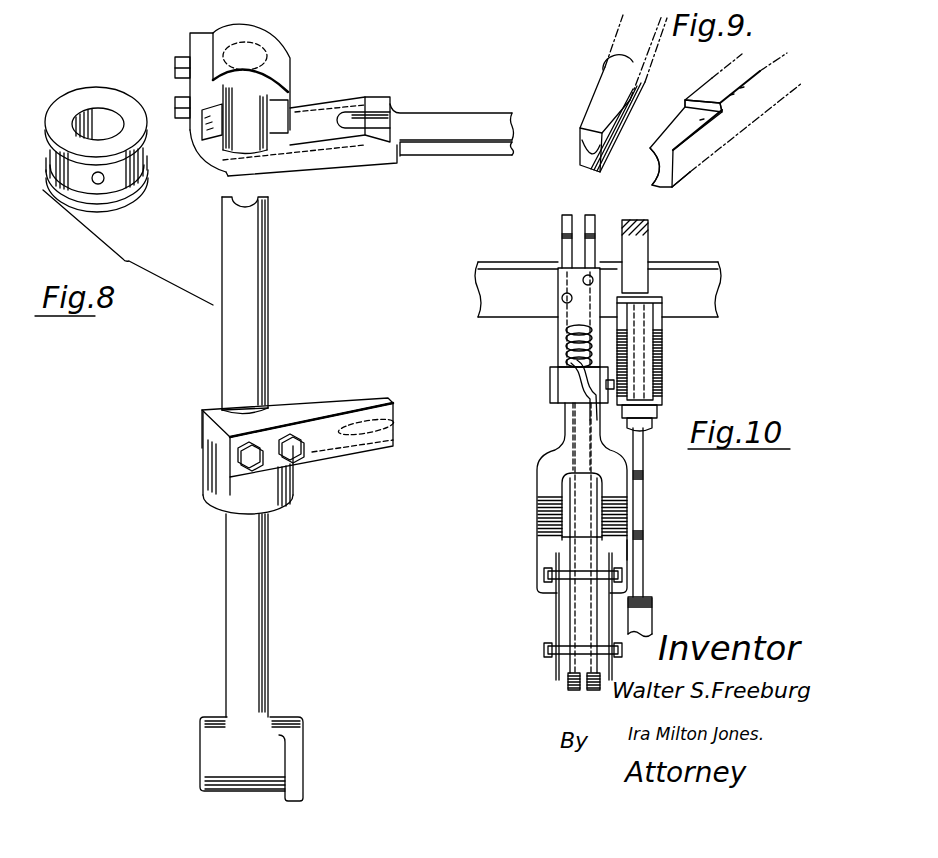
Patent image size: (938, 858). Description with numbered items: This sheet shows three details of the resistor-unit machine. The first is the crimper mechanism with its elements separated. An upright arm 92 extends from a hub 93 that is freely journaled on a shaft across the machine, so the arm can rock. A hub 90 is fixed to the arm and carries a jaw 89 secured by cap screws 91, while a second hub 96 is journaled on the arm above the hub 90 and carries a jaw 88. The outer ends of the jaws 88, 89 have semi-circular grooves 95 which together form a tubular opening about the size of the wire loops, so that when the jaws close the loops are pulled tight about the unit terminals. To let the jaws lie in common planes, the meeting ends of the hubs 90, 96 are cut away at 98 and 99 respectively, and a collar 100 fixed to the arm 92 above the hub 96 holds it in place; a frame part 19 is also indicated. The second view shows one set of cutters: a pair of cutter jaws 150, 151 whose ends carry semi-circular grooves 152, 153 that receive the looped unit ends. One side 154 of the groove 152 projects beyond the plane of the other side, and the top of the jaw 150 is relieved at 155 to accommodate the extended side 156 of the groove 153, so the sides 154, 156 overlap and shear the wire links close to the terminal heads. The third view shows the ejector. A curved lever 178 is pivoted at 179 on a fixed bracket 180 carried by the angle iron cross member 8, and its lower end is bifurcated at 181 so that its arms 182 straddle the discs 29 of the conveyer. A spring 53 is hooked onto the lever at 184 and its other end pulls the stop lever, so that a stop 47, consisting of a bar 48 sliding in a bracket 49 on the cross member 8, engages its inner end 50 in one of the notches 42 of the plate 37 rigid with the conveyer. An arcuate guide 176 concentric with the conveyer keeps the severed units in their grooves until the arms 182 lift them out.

In FIG. 8, the collar 100 is at (110, 92).
In FIG. 8, the upright arm 92 is at (263, 619).
In FIG. 8, the hub 93 is at (242, 744).
In FIG. 8, the hub 90 is at (215, 484).
In FIG. 8, the cap screw 91 is at (250, 462).
In FIG. 8, the jaw 89 is at (320, 410).
In FIG. 8, the cut-away portion 98 is at (285, 400).
In FIG. 8, the semi-circular groove 95 is at (381, 116).
In FIG. 8, the hub 96 is at (288, 72).
In FIG. 8, the cut-away portion 99 is at (221, 131).
In FIG. 8, the jaw 88 is at (319, 154).
In FIG. 8, the frame 19 is at (392, 0).
In FIG. 9, the cutter jaw 150 is at (767, 110).
In FIG. 9, the cutter jaw 151 is at (632, 50).
In FIG. 9, the semi-circular groove 152 is at (652, 170).
In FIG. 9, the semi-circular groove 153 is at (588, 157).
In FIG. 9, the groove side 154 is at (667, 121).
In FIG. 9, the relieved portion 155 is at (699, 126).
In FIG. 9, the extended groove side 156 is at (613, 108).
In FIG. 10, the angle iron cross member 8 is at (708, 286).
In FIG. 10, the disc 29 is at (568, 220).
In FIG. 10, the fixed bracket 180 is at (557, 293).
In FIG. 10, the spring 53 is at (566, 350).
In FIG. 10, the pivot 179 is at (551, 381).
In FIG. 10, the hook connection 184 is at (567, 418).
In FIG. 10, the curved lever 178 is at (556, 456).
In FIG. 10, the bifurcation 181 is at (565, 525).
In FIG. 10, the arm 182 is at (540, 592).
In FIG. 10, the guide 176 is at (579, 615).
In FIG. 10, the bar 48 is at (646, 252).
In FIG. 10, the bracket 49 is at (671, 339).
In FIG. 10, the stop 47 is at (650, 385).
In FIG. 10, the inner end 50 is at (648, 430).
In FIG. 10, the notch 42 is at (652, 480).
In FIG. 10, the plate 37 is at (633, 551).